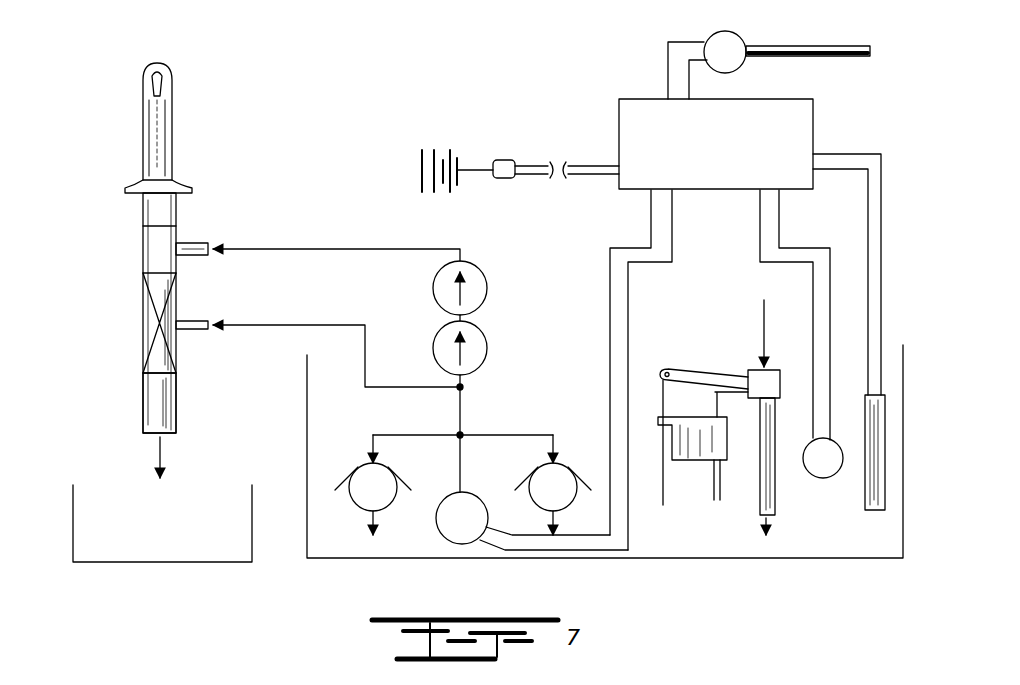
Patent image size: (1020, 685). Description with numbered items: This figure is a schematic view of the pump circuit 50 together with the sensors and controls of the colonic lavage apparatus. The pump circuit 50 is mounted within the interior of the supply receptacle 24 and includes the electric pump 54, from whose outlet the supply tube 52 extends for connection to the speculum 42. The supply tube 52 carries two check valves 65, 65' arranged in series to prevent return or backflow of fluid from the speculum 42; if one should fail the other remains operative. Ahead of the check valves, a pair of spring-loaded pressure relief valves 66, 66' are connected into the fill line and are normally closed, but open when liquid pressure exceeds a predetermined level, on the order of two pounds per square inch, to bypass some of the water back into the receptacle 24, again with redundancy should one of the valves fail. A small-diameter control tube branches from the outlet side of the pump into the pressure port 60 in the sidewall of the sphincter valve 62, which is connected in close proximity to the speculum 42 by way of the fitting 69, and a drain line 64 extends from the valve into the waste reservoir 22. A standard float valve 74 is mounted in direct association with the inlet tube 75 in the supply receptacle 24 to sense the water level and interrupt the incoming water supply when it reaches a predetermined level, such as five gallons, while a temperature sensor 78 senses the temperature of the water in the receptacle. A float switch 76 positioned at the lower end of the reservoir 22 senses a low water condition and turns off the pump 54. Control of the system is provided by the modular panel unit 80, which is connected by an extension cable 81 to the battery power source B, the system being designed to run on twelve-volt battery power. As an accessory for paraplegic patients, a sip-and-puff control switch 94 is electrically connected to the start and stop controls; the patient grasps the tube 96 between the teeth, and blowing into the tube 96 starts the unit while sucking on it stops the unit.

The waste reservoir 22 is at (176, 562).
The supply receptacle 24 is at (665, 560).
The speculum 42 is at (172, 130).
The pump circuit 50 is at (467, 405).
The supply tube 52 is at (327, 250).
The pump 54 is at (448, 497).
The pressure port 60 is at (200, 330).
The sphincter valve 62 is at (173, 300).
The drain line 64 is at (177, 397).
The check valve 65 is at (492, 345).
The check valve 65' is at (492, 288).
The pressure relief valve 66 is at (366, 485).
The pressure relief valve 66' is at (561, 485).
The fitting 69 is at (177, 233).
The float valve 74 is at (693, 462).
The inlet tube 75 is at (776, 503).
The float switch 76 is at (808, 446).
The temperature sensor 78 is at (865, 490).
The panel unit 80 is at (632, 97).
The cable 81 is at (528, 166).
The sip-and-puff control switch 94 is at (722, 32).
The tube 96 is at (785, 45).
The battery power source B is at (452, 150).